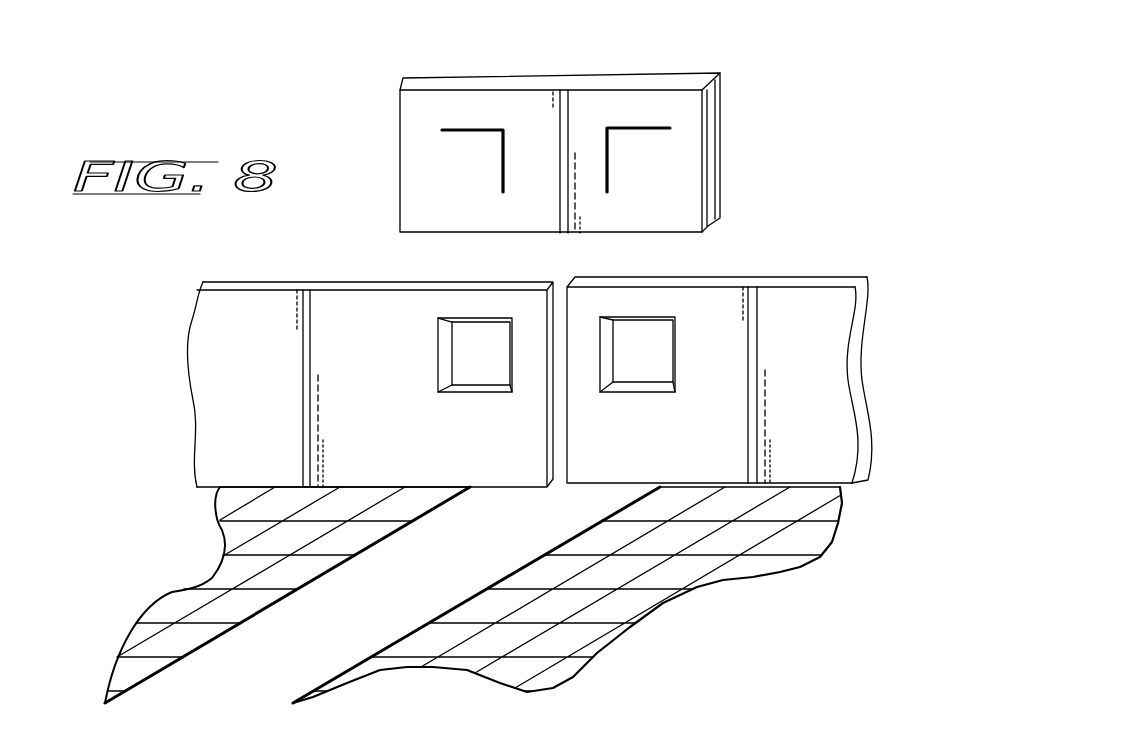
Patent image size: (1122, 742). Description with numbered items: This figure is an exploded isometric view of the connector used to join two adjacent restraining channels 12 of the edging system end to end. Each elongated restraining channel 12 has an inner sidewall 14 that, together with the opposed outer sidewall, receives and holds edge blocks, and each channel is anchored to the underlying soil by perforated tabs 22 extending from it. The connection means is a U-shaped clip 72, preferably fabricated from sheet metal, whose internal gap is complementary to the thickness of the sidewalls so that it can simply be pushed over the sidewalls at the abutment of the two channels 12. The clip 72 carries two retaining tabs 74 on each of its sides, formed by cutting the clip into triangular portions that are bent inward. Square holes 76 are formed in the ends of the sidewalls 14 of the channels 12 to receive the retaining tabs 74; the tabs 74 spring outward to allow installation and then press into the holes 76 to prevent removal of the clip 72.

The restraining channel 12 is at (253, 312).
The inner sidewall 14 is at (388, 367).
The perforated tabs 22 is at (423, 637).
The U-shaped clip 72 is at (632, 102).
The retaining tabs 74 is at (483, 143).
The square holes 76 is at (480, 373).